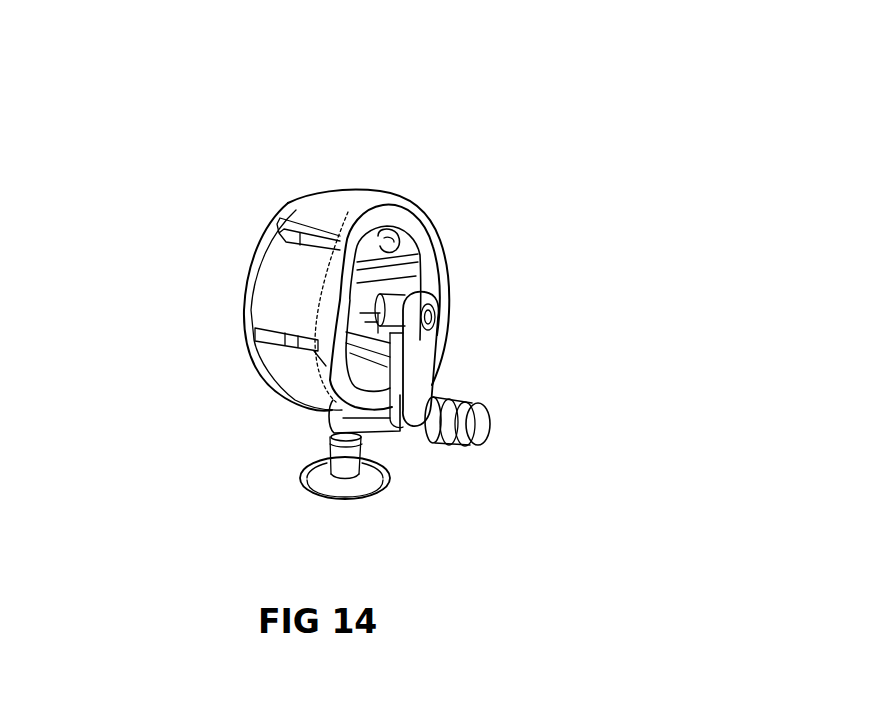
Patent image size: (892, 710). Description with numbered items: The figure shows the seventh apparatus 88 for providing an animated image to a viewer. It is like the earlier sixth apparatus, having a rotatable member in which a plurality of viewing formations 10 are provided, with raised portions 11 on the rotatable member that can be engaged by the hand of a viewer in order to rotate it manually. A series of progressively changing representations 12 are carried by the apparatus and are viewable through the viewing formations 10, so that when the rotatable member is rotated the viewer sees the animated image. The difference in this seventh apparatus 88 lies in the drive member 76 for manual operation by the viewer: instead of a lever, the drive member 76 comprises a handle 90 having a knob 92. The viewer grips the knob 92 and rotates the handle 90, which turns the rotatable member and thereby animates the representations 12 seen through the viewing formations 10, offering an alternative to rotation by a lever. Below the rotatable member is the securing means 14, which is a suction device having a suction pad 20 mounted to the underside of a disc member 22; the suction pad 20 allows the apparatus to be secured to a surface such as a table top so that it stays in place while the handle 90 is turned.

The seventh apparatus 88 is at (452, 133).
The raised portions 11 is at (300, 203).
The viewing formations 10 is at (287, 235).
The progressively changing representations 12 is at (372, 287).
The drive member 76 is at (507, 311).
The handle 90 is at (428, 358).
The knob 92 is at (452, 431).
The securing means 14 is at (278, 482).
The disc member 22 is at (320, 481).
The suction pad 20 is at (372, 498).